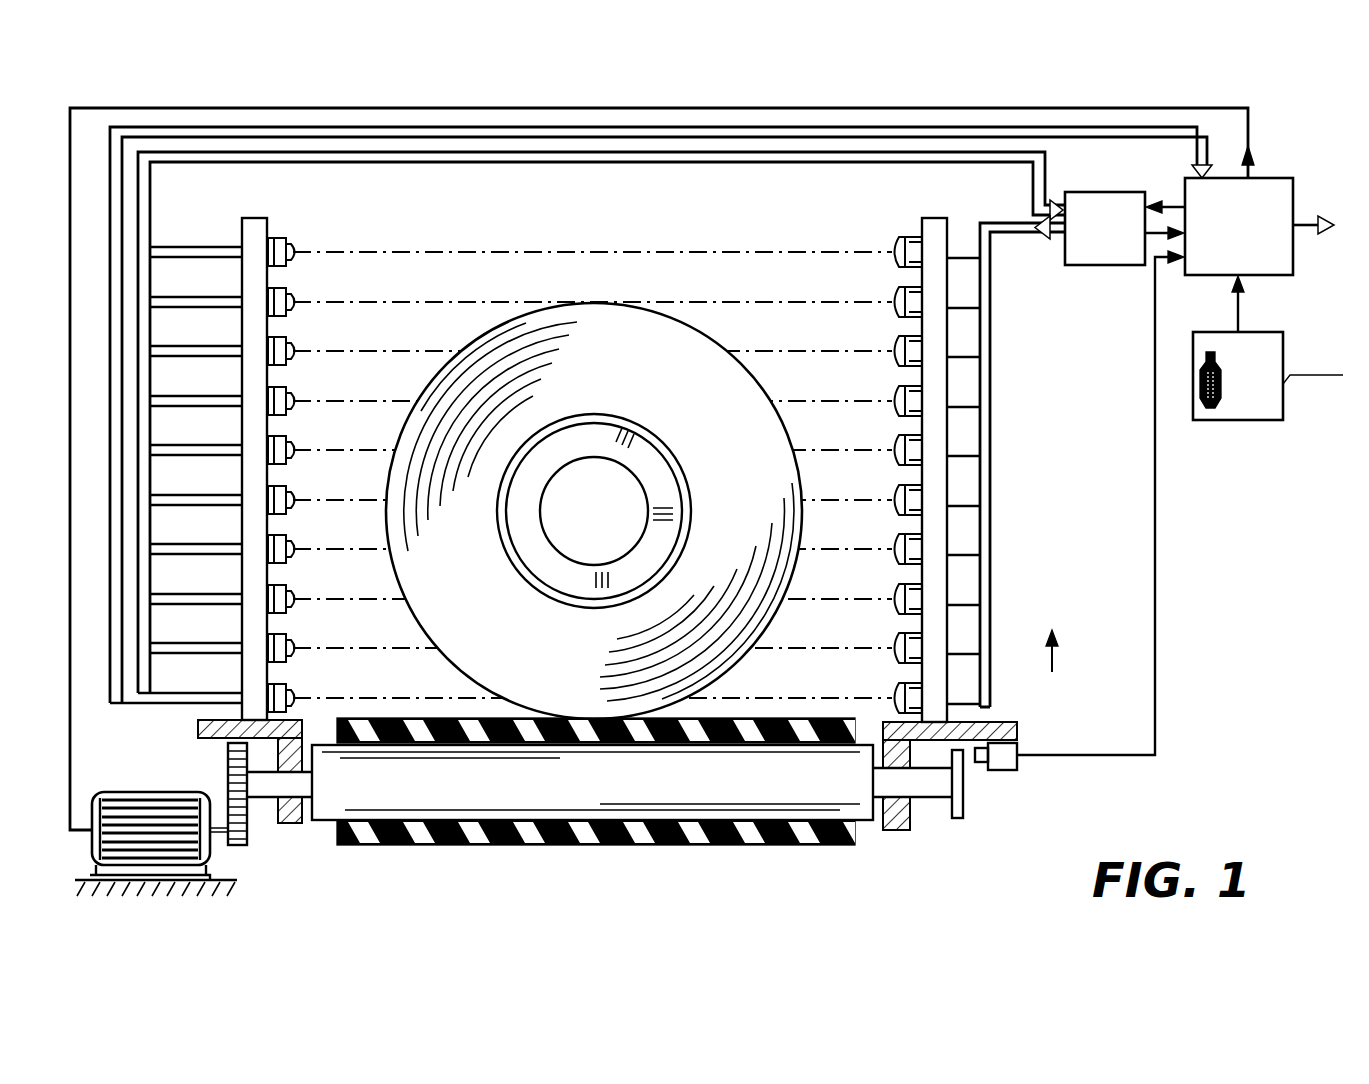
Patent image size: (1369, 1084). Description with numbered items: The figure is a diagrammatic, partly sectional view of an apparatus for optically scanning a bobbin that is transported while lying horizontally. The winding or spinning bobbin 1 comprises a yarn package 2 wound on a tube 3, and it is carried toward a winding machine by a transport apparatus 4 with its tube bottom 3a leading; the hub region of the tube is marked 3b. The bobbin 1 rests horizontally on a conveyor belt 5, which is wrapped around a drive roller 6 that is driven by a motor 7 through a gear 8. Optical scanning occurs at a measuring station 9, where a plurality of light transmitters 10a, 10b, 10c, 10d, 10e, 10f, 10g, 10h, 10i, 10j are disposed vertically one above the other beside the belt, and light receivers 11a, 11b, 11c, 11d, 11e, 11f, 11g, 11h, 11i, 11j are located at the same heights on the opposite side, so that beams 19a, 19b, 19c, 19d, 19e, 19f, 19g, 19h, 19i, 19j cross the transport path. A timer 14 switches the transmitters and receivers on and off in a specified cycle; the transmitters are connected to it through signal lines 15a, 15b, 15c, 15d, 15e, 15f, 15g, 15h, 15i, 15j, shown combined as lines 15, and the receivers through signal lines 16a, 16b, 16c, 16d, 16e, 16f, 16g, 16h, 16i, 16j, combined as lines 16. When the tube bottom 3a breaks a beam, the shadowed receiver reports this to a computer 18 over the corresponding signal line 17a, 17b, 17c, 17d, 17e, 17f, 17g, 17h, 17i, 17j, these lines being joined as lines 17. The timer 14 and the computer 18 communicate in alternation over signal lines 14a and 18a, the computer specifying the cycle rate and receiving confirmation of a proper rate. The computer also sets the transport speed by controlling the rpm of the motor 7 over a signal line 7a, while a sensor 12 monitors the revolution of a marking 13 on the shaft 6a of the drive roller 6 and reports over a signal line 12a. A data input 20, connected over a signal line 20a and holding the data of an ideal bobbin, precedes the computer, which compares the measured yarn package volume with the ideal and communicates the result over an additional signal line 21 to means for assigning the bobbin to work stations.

The bobbin 1 is at (594, 486).
The yarn package 2 is at (748, 504).
The tube 3 is at (630, 553).
The tube bottom 3a is at (620, 417).
The hub 3b is at (598, 458).
The transport apparatus 4 is at (856, 838).
The conveyor belt 5 is at (848, 738).
The drive roller 6 is at (570, 806).
The shaft 6a is at (943, 798).
The motor 7 is at (196, 792).
The signal line 7a is at (1158, 128).
The gear 8 is at (250, 805).
The measuring station 9 is at (1180, 658).
The light transmitter 10a is at (896, 688).
The light transmitter 10b is at (896, 638).
The light transmitter 10c is at (896, 589).
The light transmitter 10d is at (896, 539).
The light transmitter 10e is at (896, 490).
The light transmitter 10f is at (896, 440).
The light transmitter 10g is at (896, 391).
The light transmitter 10h is at (896, 341).
The light transmitter 10i is at (896, 292).
The light transmitter 10j is at (896, 242).
The light receiver 11a is at (288, 694).
The light receiver 11b is at (288, 644).
The light receiver 11c is at (288, 595).
The light receiver 11d is at (288, 545).
The light receiver 11e is at (288, 496).
The light receiver 11f is at (288, 446).
The light receiver 11g is at (288, 397).
The light receiver 11h is at (288, 347).
The light receiver 11i is at (288, 298).
The light receiver 11j is at (288, 248).
The sensor 12 is at (1008, 771).
The signal line 12a is at (1157, 330).
The marking 13 is at (965, 765).
The timer 14 is at (1091, 192).
The signal line 14a is at (1168, 236).
The combined signal lines 15 is at (1004, 221).
The signal line 15a is at (968, 704).
The signal line 15b is at (968, 654).
The signal line 15c is at (968, 605).
The signal line 15d is at (968, 555).
The signal line 15e is at (968, 506).
The signal line 15f is at (968, 456).
The signal line 15g is at (968, 407).
The signal line 15h is at (968, 357).
The signal line 15i is at (968, 308).
The signal line 15j is at (963, 257).
The combined signal lines 16 is at (151, 205).
The signal line 16a is at (200, 704).
The signal line 16b is at (212, 654).
The signal line 16c is at (212, 605).
The signal line 16d is at (212, 555).
The signal line 16e is at (212, 506).
The signal line 16f is at (212, 456).
The signal line 16g is at (212, 407).
The signal line 16h is at (215, 357).
The signal line 16i is at (212, 308).
The signal line 16j is at (212, 258).
The combined signal lines 17 is at (111, 212).
The signal line 17a is at (130, 703).
The signal line 17b is at (136, 640).
The signal line 17c is at (136, 591).
The signal line 17d is at (136, 541).
The signal line 17e is at (136, 503).
The signal line 17f is at (136, 455).
The signal line 17g is at (136, 393).
The signal line 17h is at (136, 343).
The signal line 17i is at (136, 294).
The signal line 17j is at (136, 244).
The computer 18 is at (1272, 178).
The signal line 18a is at (1170, 206).
The beam 19a is at (382, 686).
The beam 19b is at (379, 636).
The beam 19c is at (362, 587).
The beam 19d is at (354, 537).
The beam 19e is at (359, 488).
The beam 19f is at (372, 438).
The beam 19g is at (386, 389).
The beam 19h is at (422, 339).
The beam 19i is at (456, 290).
The beam 19j is at (446, 240).
The data input 20 is at (1268, 398).
The signal line 20a is at (1240, 318).
The signal line 21 is at (1306, 224).